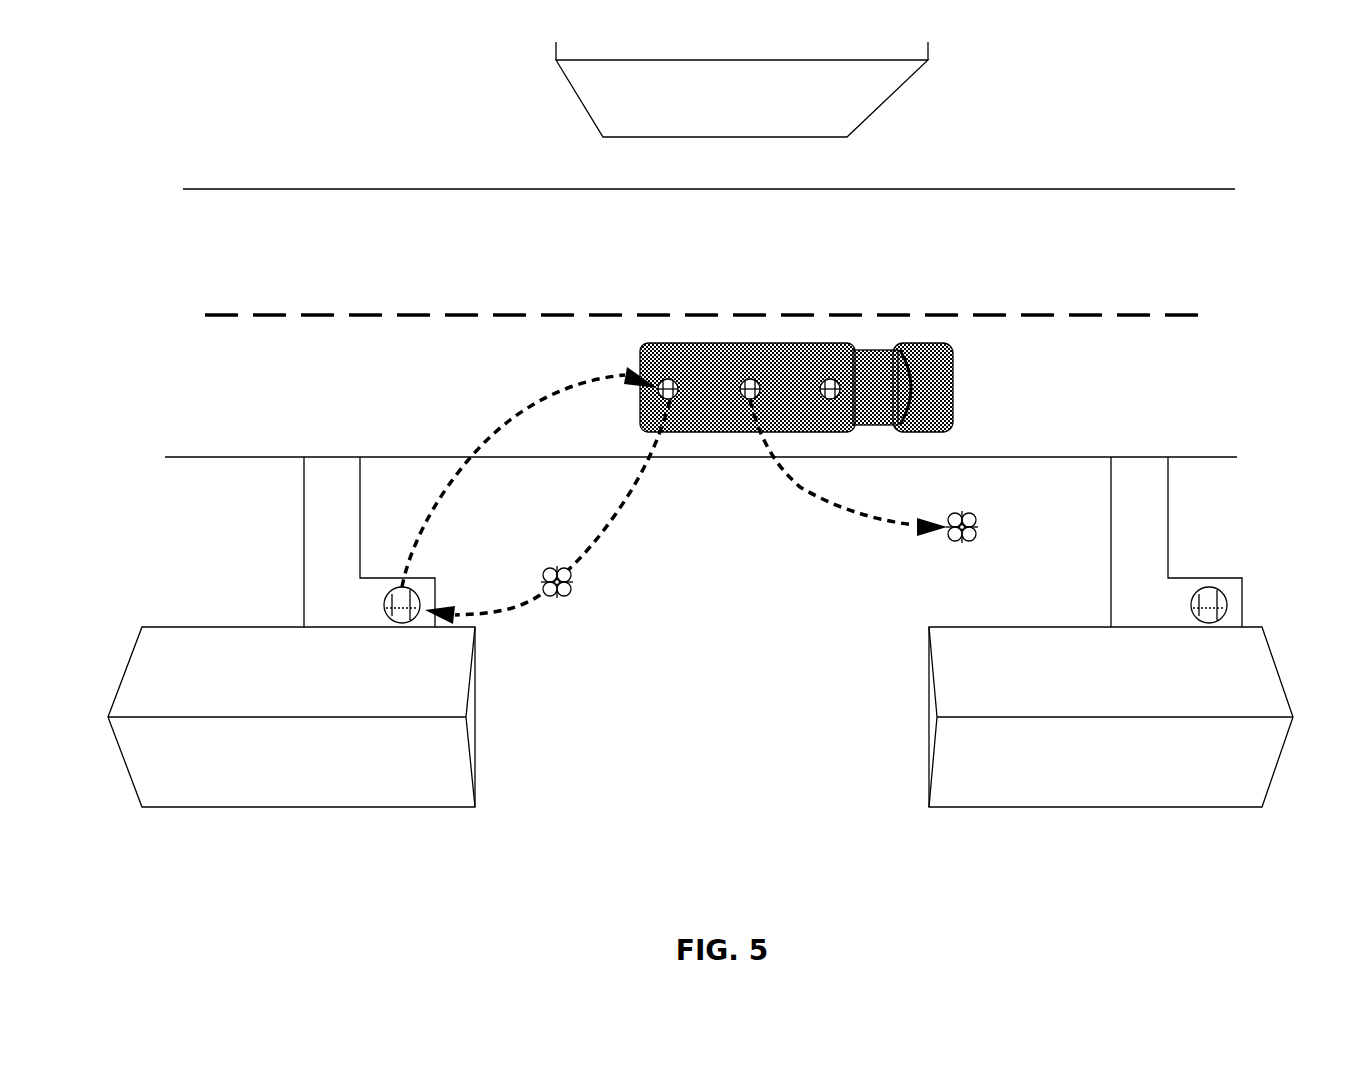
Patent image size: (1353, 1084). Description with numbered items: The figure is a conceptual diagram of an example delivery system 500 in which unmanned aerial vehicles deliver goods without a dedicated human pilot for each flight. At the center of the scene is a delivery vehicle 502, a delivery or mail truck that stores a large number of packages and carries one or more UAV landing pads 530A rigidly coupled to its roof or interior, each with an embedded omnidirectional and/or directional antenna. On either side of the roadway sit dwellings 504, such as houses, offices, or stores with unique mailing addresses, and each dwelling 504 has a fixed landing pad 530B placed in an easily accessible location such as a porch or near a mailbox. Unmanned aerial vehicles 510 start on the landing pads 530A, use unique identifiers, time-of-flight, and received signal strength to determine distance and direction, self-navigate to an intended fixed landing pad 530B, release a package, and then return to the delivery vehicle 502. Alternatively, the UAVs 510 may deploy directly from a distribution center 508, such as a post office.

The delivery system 500 is at (1172, 105).
The delivery vehicle 502 is at (948, 367).
The dwelling 504 is at (700, 717).
The distribution center 508 is at (742, 89).
The unmanned aerial vehicle 510 is at (575, 588).
The UAV landing pad 530A is at (830, 379).
The fixed landing pad 530B is at (385, 598).